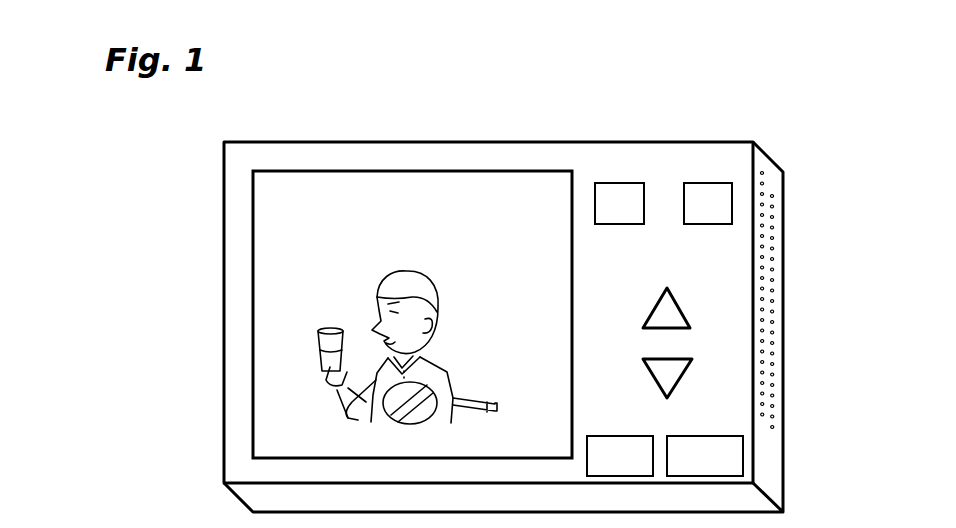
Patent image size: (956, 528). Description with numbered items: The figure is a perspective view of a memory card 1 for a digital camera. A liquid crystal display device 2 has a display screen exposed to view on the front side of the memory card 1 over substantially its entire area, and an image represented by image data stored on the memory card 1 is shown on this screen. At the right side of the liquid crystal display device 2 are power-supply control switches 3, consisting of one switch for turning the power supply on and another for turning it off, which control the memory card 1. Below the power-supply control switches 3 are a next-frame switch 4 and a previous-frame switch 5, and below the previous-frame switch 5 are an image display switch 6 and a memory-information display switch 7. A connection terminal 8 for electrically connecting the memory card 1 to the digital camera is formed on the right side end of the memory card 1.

The memory card 1 is at (765, 130).
The liquid crystal display device 2 is at (533, 177).
The power-supply control switches 3 is at (662, 178).
The next-frame switch 4 is at (677, 300).
The previous-frame switch 5 is at (676, 355).
The image display switch 6 is at (623, 434).
The memory-information display switch 7 is at (711, 434).
The connection terminal 8 is at (772, 370).